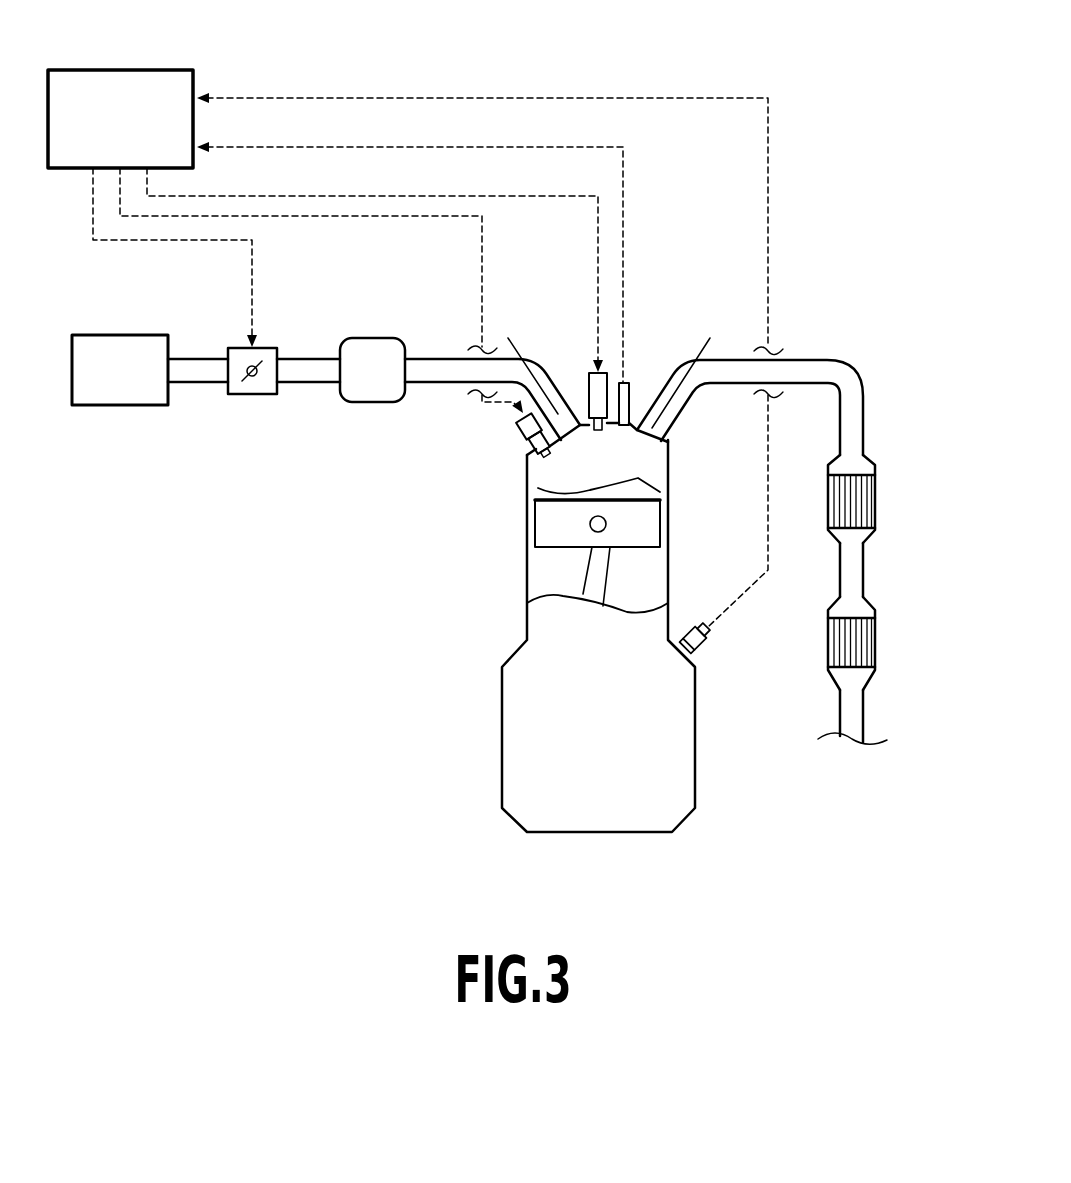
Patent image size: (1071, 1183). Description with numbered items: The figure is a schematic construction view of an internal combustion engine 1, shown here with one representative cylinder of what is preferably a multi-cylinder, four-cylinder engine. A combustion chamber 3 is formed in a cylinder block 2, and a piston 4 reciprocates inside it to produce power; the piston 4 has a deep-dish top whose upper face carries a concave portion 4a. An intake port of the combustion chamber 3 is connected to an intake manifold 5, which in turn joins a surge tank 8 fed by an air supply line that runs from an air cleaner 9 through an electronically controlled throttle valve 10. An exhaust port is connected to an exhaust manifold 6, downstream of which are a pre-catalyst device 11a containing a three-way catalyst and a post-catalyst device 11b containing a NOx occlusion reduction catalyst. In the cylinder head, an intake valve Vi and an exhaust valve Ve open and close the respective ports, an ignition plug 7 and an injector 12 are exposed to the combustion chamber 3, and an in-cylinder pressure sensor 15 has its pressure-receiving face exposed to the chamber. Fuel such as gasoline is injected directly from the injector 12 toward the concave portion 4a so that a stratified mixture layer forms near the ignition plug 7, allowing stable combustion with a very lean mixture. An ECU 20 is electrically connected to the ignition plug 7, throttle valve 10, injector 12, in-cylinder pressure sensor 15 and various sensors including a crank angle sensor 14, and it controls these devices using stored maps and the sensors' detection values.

The internal combustion engine 1 is at (309, 622).
The cylinder block 2 is at (538, 625).
The combustion chamber 3 is at (630, 463).
The piston 4 is at (548, 528).
The concave portion 4a is at (590, 488).
The intake manifold 5 is at (547, 373).
The exhaust manifold 6 is at (670, 389).
The ignition plug 7 is at (590, 374).
The surge tank 8 is at (375, 338).
The air cleaner 9 is at (118, 405).
The throttle valve 10 is at (252, 395).
The pre-catalyst device 11a is at (873, 503).
The post-catalyst device 11b is at (873, 647).
The injector 12 is at (519, 431).
The crank angle sensor 14 is at (705, 651).
The in-cylinder pressure sensor 15 is at (628, 383).
The ECU 20 is at (122, 70).
The intake valve Vi is at (517, 358).
The exhaust valve Ve is at (710, 339).